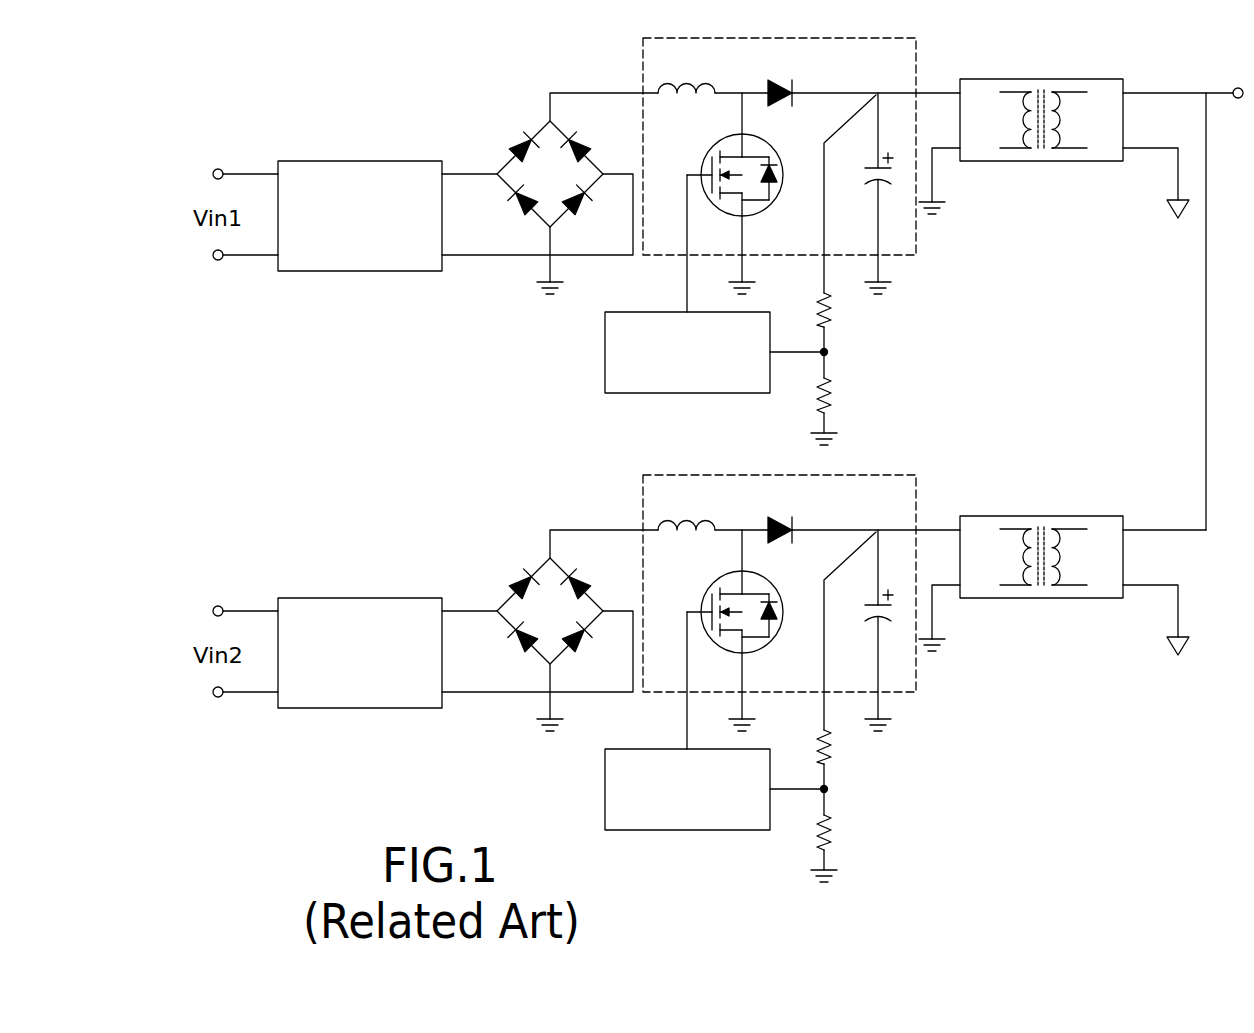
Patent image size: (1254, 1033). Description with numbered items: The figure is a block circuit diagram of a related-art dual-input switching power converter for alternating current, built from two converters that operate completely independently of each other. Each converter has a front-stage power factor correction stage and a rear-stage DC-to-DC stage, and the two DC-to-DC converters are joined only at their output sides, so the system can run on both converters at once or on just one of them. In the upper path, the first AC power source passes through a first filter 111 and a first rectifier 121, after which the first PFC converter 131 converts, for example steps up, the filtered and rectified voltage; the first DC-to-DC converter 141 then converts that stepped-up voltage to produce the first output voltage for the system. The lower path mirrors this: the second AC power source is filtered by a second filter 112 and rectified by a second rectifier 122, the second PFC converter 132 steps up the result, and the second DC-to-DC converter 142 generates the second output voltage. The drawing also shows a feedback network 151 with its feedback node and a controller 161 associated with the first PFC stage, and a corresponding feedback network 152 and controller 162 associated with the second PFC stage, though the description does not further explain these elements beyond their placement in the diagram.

The first filter 111 is at (360, 163).
The second filter 112 is at (356, 635).
The first rectifier 121 is at (545, 124).
The second rectifier 122 is at (528, 627).
The first PFC converter 131 is at (641, 63).
The second PFC converter 132 is at (752, 606).
The first DC-to-DC converter 141 is at (1043, 82).
The second DC-to-DC converter 142 is at (1062, 567).
The first voltage divider 151 is at (862, 315).
The second voltage divider 152 is at (871, 806).
The first controller 161 is at (676, 318).
The second controller 162 is at (678, 771).